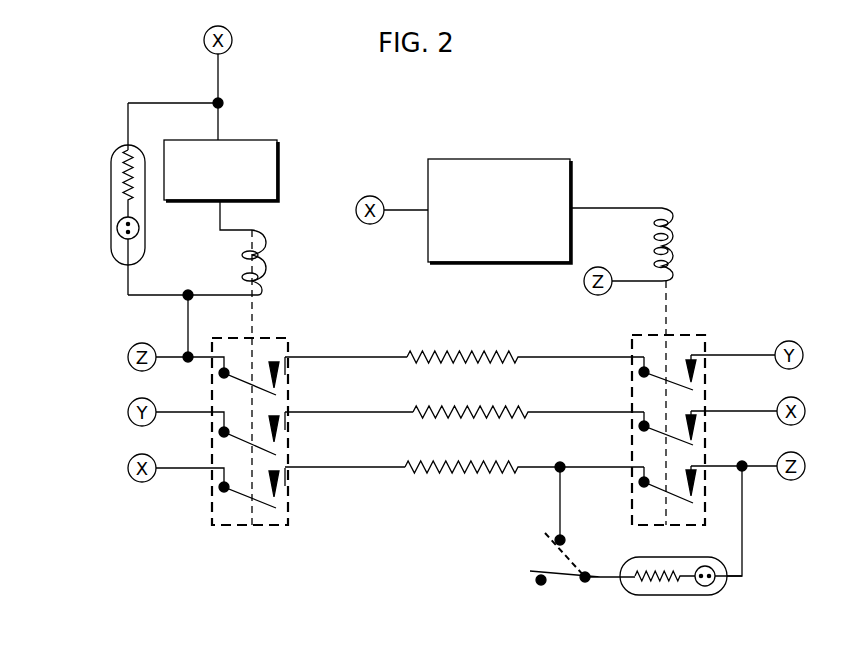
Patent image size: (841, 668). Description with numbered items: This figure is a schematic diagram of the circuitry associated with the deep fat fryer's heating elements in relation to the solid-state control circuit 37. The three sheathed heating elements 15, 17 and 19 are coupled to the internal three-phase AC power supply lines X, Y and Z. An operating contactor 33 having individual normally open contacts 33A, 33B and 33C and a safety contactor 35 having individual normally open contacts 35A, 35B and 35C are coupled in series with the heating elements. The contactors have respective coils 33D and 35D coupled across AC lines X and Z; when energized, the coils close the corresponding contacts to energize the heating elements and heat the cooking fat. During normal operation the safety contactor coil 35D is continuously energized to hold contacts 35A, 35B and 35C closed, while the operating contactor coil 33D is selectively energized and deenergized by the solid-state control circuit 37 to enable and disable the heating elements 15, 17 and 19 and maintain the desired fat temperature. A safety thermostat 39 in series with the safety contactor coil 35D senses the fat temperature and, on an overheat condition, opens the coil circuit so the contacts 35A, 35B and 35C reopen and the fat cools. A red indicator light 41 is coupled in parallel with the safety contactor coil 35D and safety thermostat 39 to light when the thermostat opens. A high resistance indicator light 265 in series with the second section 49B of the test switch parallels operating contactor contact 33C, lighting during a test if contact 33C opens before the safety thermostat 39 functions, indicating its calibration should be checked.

The heating element 15 is at (458, 352).
The heating element 17 is at (428, 408).
The heating element 19 is at (430, 462).
The operating contactor 33 is at (695, 335).
The operating contactor contact 33A is at (660, 384).
The operating contactor contact 33B is at (660, 439).
The operating contactor contact 33C is at (660, 494).
The operating contactor coil 33D is at (676, 242).
The safety contactor 35 is at (268, 338).
The safety contactor contact 35A is at (245, 385).
The safety contactor contact 35B is at (245, 441).
The safety contactor contact 35C is at (240, 498).
The safety contactor coil 35D is at (260, 246).
The solid-state control circuit 37 is at (490, 158).
The safety thermostat 39 is at (277, 140).
The red indicator light 41 is at (111, 182).
The second section of the test switch 49B is at (545, 553).
The high resistance indicator light 265 is at (650, 596).